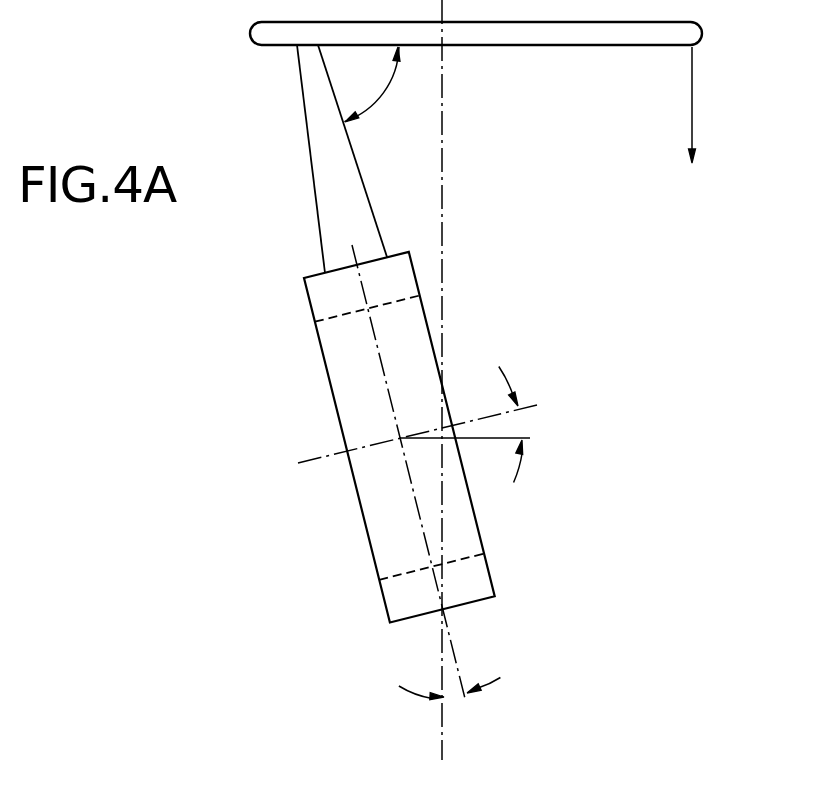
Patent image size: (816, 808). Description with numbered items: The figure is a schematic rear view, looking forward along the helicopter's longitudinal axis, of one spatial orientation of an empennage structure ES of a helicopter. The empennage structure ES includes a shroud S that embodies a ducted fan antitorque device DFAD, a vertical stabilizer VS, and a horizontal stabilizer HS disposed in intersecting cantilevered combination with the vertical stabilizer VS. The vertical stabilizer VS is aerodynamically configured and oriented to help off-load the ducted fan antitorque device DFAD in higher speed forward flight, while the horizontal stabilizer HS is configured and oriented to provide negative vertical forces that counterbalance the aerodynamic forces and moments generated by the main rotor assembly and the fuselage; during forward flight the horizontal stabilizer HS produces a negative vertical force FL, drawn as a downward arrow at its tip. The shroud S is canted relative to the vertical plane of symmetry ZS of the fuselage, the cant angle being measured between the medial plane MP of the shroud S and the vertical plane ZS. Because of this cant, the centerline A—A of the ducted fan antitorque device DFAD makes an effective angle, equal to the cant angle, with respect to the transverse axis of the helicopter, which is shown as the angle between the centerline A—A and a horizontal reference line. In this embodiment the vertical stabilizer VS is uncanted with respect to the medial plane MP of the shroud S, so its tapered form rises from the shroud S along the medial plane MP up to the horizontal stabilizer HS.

The vertical stabilizer VS is at (290, 90).
The horizontal stabilizer HS is at (545, 52).
The negative vertical force FL is at (710, 105).
The empennage structure ES is at (532, 248).
The shroud S is at (295, 314).
The medial plane of the shroud MP is at (368, 376).
The centerline of the ducted fan antitorque device A is at (417, 436).
The ducted fan antitorque device DFAD is at (359, 554).
The vertical plane of symmetry ZS is at (445, 730).